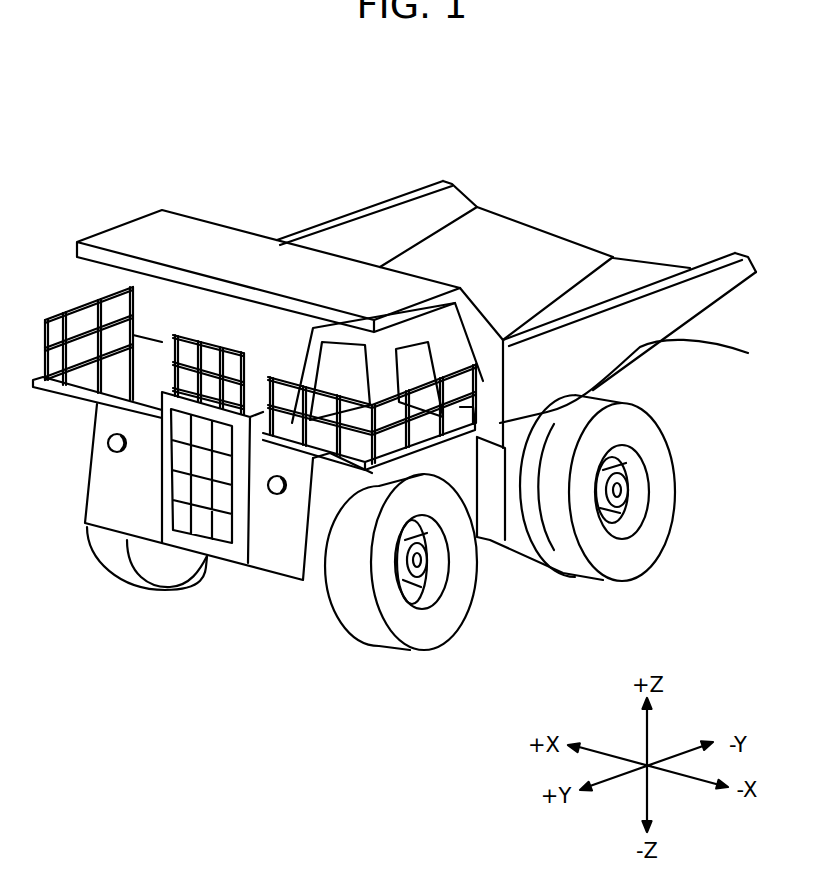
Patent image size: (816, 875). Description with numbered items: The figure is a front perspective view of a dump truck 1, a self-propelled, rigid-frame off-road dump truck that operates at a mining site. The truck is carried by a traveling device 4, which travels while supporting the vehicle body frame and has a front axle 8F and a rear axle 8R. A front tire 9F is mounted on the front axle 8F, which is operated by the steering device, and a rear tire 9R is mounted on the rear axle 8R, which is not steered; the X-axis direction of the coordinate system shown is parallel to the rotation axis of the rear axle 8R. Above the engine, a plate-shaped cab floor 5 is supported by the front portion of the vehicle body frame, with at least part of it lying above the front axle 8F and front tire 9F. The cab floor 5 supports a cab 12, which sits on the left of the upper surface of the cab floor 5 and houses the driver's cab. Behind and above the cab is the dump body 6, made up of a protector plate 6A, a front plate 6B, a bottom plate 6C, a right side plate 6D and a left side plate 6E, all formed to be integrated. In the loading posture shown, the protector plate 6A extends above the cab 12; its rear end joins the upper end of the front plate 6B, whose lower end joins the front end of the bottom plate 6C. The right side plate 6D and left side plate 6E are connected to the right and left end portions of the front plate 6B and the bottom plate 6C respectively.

The dump truck 1 is at (116, 188).
The traveling device 4 is at (676, 455).
The cab floor 5 is at (148, 372).
The dump body 6 is at (429, 185).
The protector plate 6A is at (257, 247).
The front plate 6B is at (653, 340).
The bottom plate 6C is at (521, 237).
The right side plate 6D is at (400, 217).
The left side plate 6E is at (638, 320).
The front axle 8F is at (418, 572).
The rear axle 8R is at (625, 492).
The front tire 9F is at (463, 573).
The rear tire 9R is at (665, 495).
The cab 12 is at (357, 347).